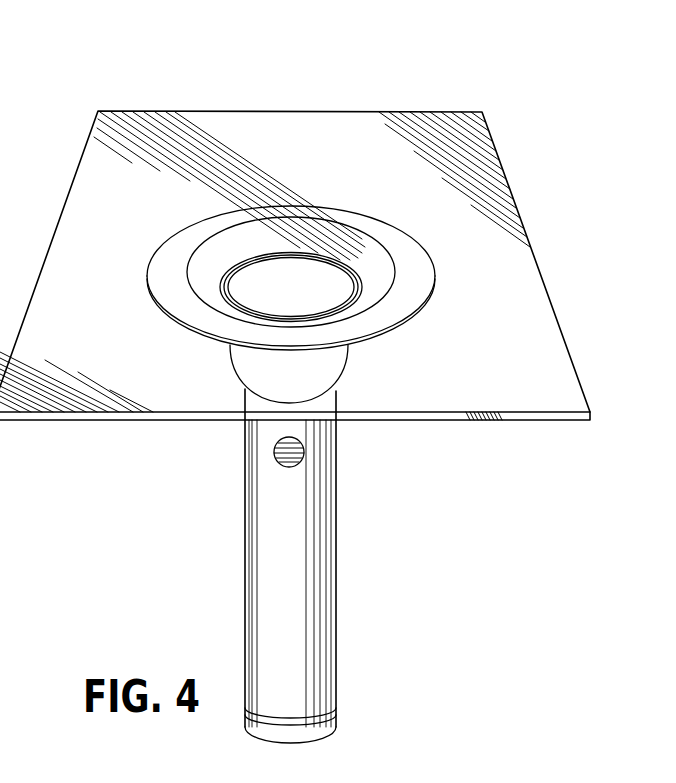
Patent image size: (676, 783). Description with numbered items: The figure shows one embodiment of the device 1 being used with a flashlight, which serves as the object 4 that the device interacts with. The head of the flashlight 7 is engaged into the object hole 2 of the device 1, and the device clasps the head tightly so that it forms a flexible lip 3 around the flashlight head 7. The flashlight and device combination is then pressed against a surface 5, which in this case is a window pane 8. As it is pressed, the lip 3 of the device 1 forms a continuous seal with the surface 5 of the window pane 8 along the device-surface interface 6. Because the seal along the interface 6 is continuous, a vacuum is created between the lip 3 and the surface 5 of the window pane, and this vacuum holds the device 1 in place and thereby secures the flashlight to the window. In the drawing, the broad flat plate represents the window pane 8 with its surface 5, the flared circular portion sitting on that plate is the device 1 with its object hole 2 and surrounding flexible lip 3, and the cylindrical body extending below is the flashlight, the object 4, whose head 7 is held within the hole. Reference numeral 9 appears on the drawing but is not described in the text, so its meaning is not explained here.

The device 1 is at (168, 316).
The object hole 2 is at (302, 282).
The flexible lip 3 is at (408, 248).
The object 4 is at (317, 582).
The surface 5 is at (410, 420).
The device-surface interface 6 is at (290, 205).
The flashlight head 7 is at (252, 370).
The window pane 8 is at (148, 111).
The flange rim 9 is at (413, 292).